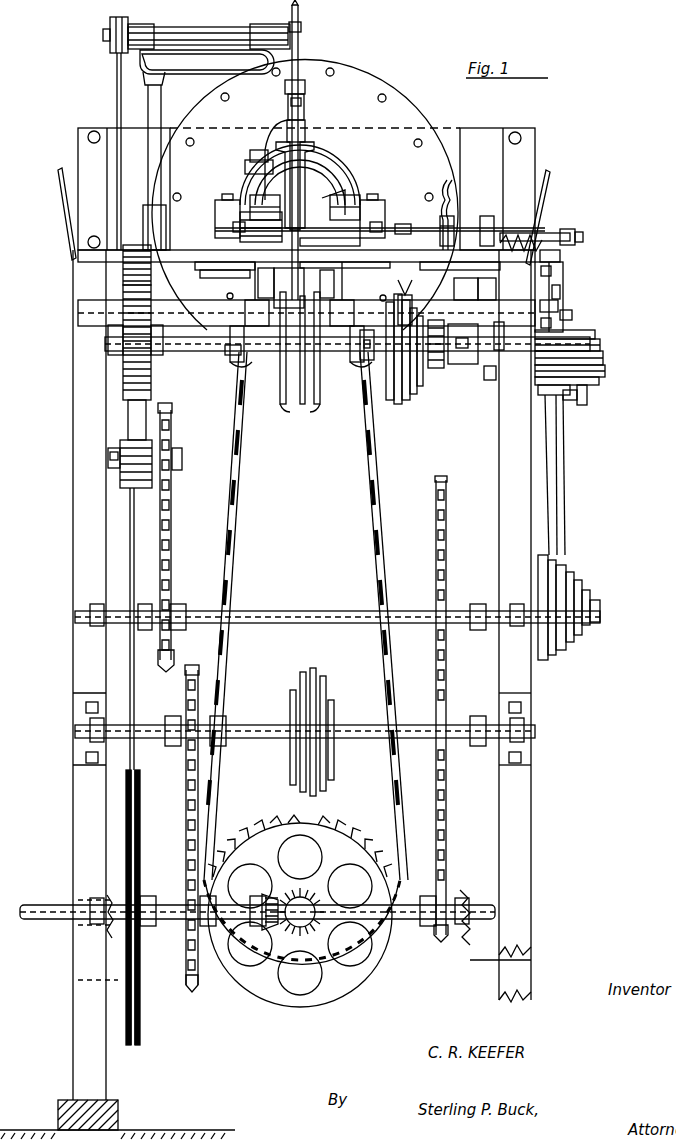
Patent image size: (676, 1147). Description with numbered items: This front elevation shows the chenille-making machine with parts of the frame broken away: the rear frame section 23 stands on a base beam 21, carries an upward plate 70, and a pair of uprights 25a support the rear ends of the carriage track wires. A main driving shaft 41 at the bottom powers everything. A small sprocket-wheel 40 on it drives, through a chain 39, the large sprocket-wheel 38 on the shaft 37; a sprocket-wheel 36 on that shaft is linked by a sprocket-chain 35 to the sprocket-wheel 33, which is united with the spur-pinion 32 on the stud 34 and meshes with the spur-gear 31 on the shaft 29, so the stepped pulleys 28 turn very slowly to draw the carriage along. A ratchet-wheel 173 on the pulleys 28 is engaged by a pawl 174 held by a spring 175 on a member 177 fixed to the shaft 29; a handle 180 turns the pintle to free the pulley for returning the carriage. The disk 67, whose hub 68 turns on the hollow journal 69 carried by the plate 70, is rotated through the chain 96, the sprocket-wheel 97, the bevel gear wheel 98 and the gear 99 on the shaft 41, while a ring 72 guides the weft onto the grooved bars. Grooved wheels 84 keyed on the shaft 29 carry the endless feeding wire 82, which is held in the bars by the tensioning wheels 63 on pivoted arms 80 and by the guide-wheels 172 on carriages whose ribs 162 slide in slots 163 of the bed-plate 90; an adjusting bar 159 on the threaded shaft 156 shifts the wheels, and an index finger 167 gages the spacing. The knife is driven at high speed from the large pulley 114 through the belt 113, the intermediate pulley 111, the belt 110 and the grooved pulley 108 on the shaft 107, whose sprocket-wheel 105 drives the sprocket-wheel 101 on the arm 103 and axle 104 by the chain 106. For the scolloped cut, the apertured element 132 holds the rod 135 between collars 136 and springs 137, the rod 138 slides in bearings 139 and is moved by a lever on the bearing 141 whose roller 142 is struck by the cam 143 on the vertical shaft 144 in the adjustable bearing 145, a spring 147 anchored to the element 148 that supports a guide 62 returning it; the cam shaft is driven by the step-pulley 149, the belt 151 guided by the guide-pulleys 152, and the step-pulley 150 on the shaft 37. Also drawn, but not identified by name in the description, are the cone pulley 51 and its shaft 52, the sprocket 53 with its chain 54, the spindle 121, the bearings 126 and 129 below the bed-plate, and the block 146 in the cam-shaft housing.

The base beam 21 is at (118, 1112).
The rear frame section 23 is at (103, 950).
The uprights or standards 25a is at (562, 186).
The stepped pulleys 28 is at (398, 405).
The shaft 29 is at (215, 345).
The spur-gear 31 is at (145, 388).
The spur-pinion 32 is at (122, 488).
The sprocket-wheel 33 is at (170, 406).
The stud 34 is at (182, 458).
The sprocket-chain 35 is at (172, 530).
The sprocket-wheel 36 is at (168, 672).
The shaft 37 is at (328, 610).
The sprocket-wheel 38 is at (438, 478).
The chain 39 is at (440, 800).
The sprocket-wheel 40 is at (441, 942).
The main driving shaft 41 is at (55, 905).
The cone pulley 51 is at (310, 670).
The shaft 52 is at (272, 724).
The sprocket 53 is at (198, 655).
The chain 54 is at (188, 808).
The guide 62 is at (452, 183).
The tensioning wheels 63 is at (256, 195).
The disk 67 is at (365, 72).
The hub 68 is at (335, 165).
The hollow journal 69 is at (335, 178).
The plate 70 is at (455, 135).
The ring 72 is at (270, 172).
The pivotally mounted arms 80 is at (218, 205).
The endless feeding wire 82 is at (320, 408).
The grooved wheels 84 is at (286, 388).
The bed-plate 90 is at (470, 266).
The chain 96 is at (232, 458).
The sprocket-wheel 97 is at (315, 822).
The gear wheel 98 is at (325, 888).
The gear 99 is at (265, 930).
The sprocket-wheel 101 is at (285, 140).
The arm 103 is at (288, 106).
The axle 104 is at (305, 124).
The sprocket-wheel 105 is at (290, 12).
The driving chain 106 is at (286, 85).
The shaft 107 is at (210, 36).
The grooved pulley 108 is at (110, 27).
The belt 110 is at (117, 78).
The intermediate pulley 111 is at (118, 293).
The belt 113 is at (135, 762).
The driving pulley 114 is at (141, 790).
The spindle 121 is at (318, 146).
The bearing 126 is at (276, 290).
The bracket 129 is at (262, 280).
The apertured element 132 is at (335, 272).
The rod 135 is at (386, 228).
The collars 136 is at (232, 236).
The springs 137 is at (245, 222).
The rod 138 is at (455, 224).
The bearings 139 is at (494, 224).
The bearing 141 is at (552, 228).
The stud or roller 142 is at (582, 240).
The cam 143 is at (560, 256).
The shaft 144 is at (563, 270).
The adjustable bearing 145 is at (560, 290).
The block 146 is at (560, 305).
The spring 147 is at (464, 289).
The adjustable element 148 is at (420, 248).
The step-pulley 149 is at (598, 340).
The step-pulley 150 is at (566, 572).
The belt 151 is at (565, 432).
The guide-pulleys 152 is at (582, 405).
The shaft 156 is at (572, 317).
The adjusting bar 159 is at (242, 360).
The rib 162 is at (230, 276).
The slot 163 is at (221, 271).
The index finger 167 is at (375, 264).
The grooved guide-wheel 172 is at (350, 188).
The ratchet-wheel 173 is at (436, 368).
The pawl 174 is at (412, 300).
The spring 175 is at (480, 292).
The member 177 is at (490, 380).
The handle 180 is at (496, 320).